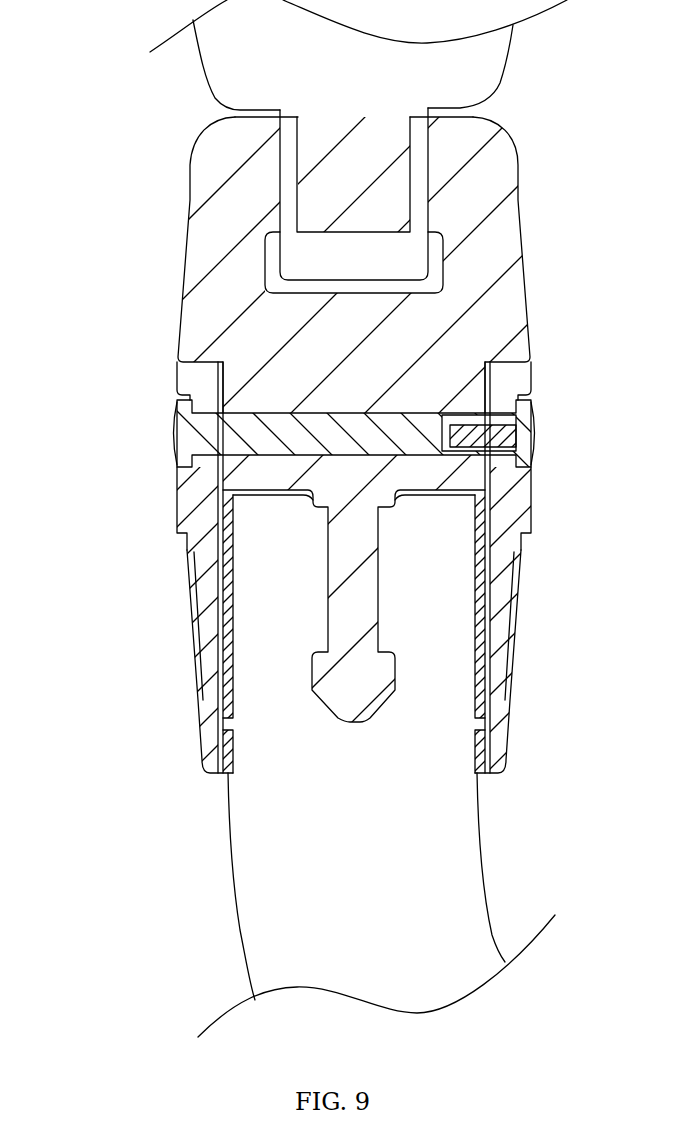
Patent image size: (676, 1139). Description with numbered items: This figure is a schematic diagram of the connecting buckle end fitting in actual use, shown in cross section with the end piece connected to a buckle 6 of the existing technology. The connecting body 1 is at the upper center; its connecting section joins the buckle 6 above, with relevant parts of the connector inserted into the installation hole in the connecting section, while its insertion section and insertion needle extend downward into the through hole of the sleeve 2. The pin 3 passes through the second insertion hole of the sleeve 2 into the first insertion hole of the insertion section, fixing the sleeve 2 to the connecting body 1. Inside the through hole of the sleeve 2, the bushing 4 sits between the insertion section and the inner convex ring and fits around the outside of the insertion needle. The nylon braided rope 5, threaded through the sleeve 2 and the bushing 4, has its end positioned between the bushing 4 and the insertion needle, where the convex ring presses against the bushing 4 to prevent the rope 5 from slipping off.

The connecting body 1 is at (197, 322).
The sleeve 2 is at (210, 585).
The pin 3 is at (188, 436).
The bushing 4 is at (217, 650).
The nylon braided rope 5 is at (280, 858).
The buckle 6 is at (238, 75).